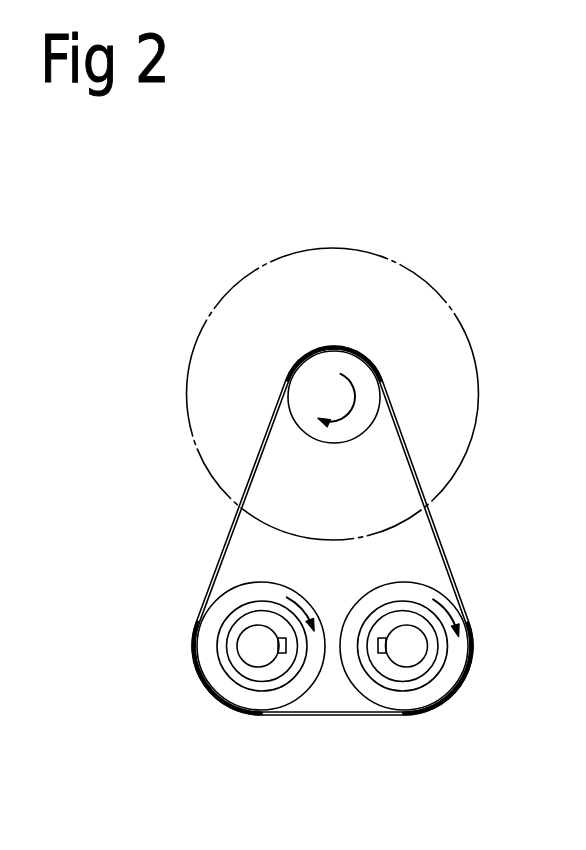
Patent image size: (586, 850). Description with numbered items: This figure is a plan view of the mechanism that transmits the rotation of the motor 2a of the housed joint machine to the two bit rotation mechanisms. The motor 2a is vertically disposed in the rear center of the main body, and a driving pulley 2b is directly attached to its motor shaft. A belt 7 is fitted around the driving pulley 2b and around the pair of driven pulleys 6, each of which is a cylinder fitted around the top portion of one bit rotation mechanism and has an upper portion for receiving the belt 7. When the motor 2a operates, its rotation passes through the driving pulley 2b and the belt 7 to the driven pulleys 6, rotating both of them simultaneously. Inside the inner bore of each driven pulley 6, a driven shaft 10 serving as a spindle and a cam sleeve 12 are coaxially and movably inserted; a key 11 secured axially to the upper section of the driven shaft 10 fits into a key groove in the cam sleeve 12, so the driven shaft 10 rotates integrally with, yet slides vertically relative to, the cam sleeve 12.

The motor 2a is at (472, 357).
The driving pulley 2b is at (372, 378).
The belt 7 is at (442, 550).
The driven pulley 6 is at (213, 685).
The driven shaft 10 is at (251, 642).
The key 11 is at (286, 653).
The cam sleeve 12 is at (252, 675).